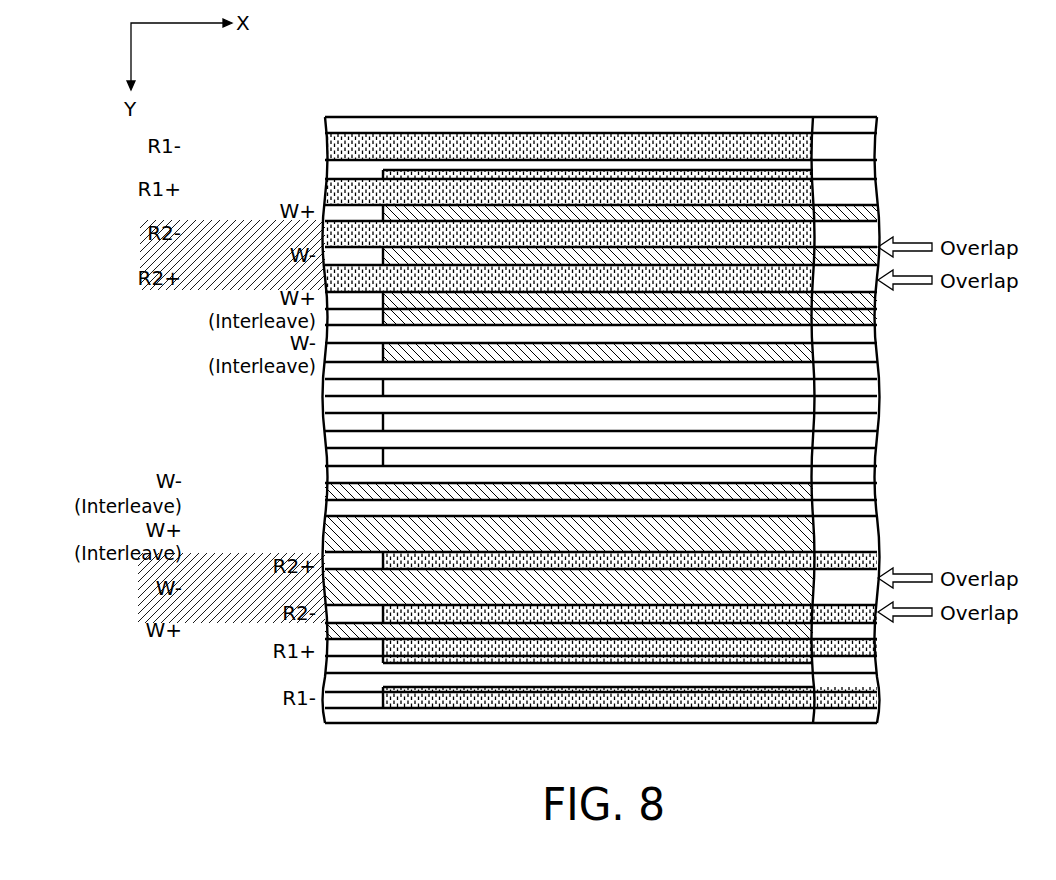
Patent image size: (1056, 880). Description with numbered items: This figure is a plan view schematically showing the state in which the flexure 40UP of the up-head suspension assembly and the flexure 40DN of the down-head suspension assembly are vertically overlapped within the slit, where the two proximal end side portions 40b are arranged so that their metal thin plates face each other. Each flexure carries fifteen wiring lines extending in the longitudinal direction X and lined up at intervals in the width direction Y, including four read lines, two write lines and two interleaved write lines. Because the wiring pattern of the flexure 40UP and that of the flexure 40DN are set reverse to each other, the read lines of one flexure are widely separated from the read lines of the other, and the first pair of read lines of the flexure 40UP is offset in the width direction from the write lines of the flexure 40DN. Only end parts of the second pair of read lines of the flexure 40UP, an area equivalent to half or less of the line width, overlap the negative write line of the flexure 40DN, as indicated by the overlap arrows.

The flexure of the up-head suspension assembly 40UP is at (427, 117).
The proximal end side portion 40b is at (619, 117).
The flexure of the down-head suspension assembly 40DN is at (847, 117).